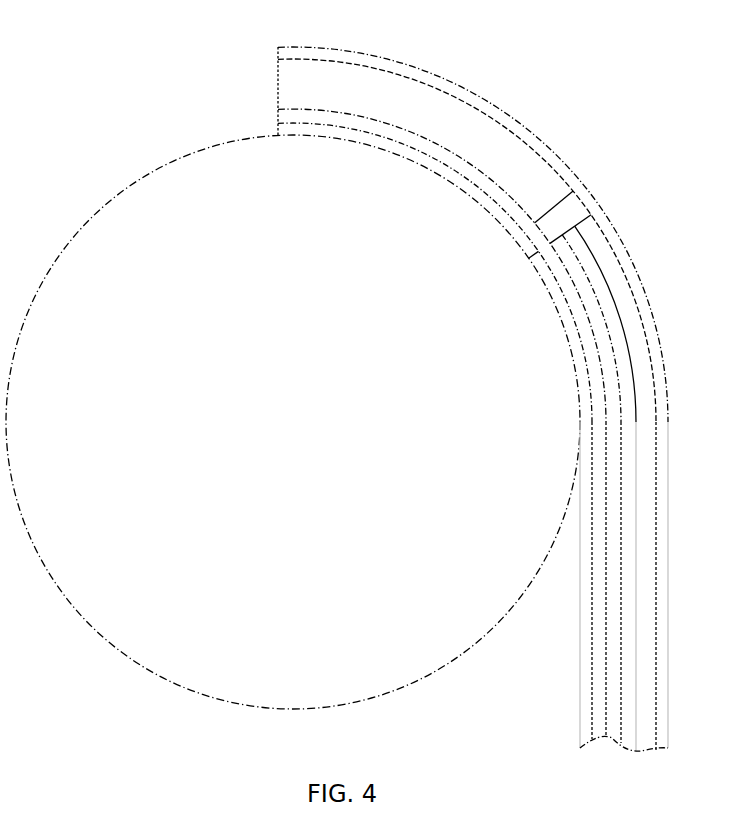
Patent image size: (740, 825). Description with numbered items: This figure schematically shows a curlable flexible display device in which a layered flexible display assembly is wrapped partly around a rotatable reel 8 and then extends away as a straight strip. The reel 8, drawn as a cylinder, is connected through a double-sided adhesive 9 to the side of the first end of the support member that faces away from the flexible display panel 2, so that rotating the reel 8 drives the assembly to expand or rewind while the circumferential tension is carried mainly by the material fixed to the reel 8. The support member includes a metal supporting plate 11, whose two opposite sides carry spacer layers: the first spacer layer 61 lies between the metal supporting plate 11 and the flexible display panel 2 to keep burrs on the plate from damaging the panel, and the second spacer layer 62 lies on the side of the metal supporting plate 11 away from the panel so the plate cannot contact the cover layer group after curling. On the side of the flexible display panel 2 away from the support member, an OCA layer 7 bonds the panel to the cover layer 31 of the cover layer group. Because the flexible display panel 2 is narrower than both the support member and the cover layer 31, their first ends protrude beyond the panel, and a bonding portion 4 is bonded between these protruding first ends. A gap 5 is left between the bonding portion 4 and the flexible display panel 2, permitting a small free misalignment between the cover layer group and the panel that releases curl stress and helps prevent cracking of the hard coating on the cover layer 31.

The flexible display panel 2 is at (615, 322).
The bonding portion 4 is at (422, 97).
The gap 5 is at (575, 207).
The OCA layer 7 is at (608, 265).
The reel 8 is at (212, 170).
The double-sided adhesive 9 is at (315, 128).
The metal supporting plate 11 is at (360, 127).
The cover layer 31 is at (468, 93).
The first spacer layer 61 is at (613, 388).
The second spacer layer 62 is at (582, 647).